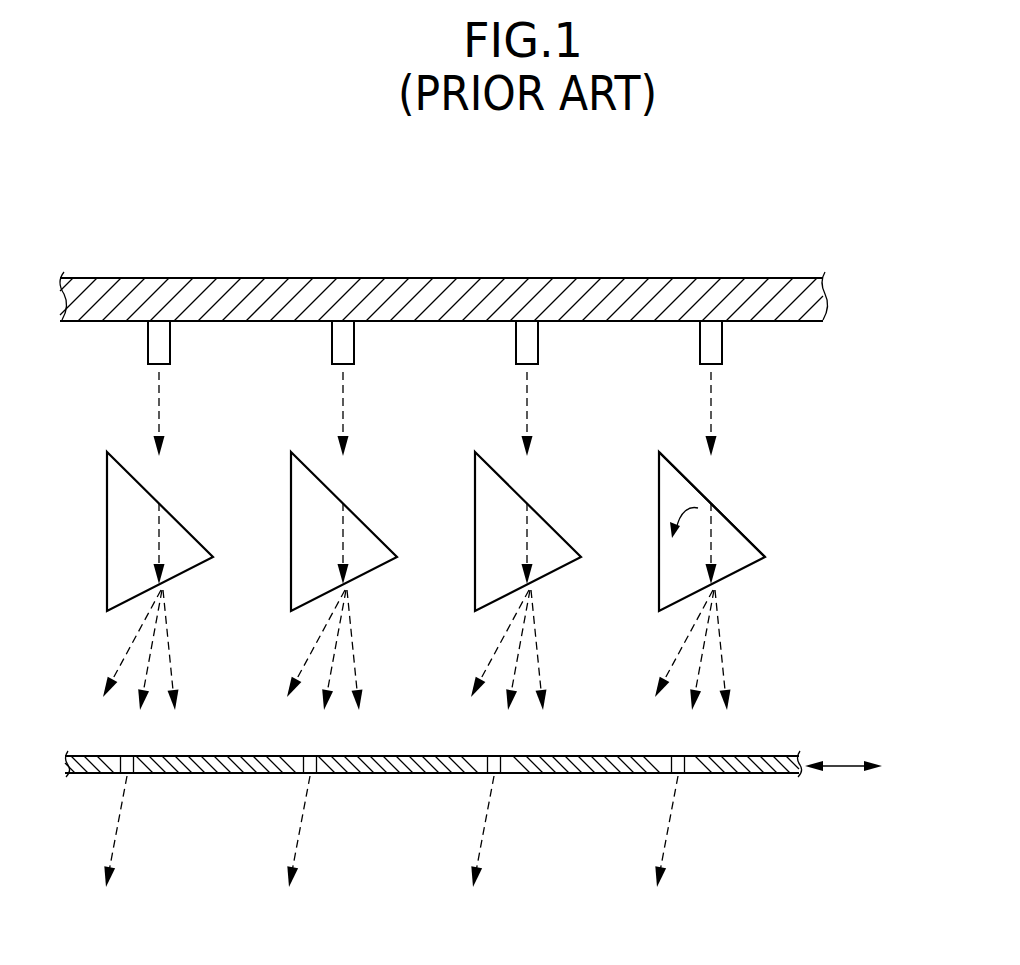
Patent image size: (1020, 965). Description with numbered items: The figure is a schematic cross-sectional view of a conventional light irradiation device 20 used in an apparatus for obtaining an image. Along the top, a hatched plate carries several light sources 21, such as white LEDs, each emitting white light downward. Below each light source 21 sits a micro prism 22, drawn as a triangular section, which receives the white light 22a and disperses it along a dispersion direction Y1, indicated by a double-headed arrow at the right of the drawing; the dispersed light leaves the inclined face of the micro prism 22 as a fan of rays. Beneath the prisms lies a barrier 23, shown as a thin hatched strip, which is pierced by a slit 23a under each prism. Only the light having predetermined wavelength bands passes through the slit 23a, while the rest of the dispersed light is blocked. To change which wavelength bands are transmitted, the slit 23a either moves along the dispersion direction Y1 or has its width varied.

The light irradiation device 20 is at (845, 288).
The light source 21 is at (718, 344).
The micro prism 22 is at (750, 537).
The white light 22a is at (688, 555).
The barrier 23 is at (773, 773).
The slit 23a is at (680, 774).
The dispersion direction Y1 is at (843, 751).